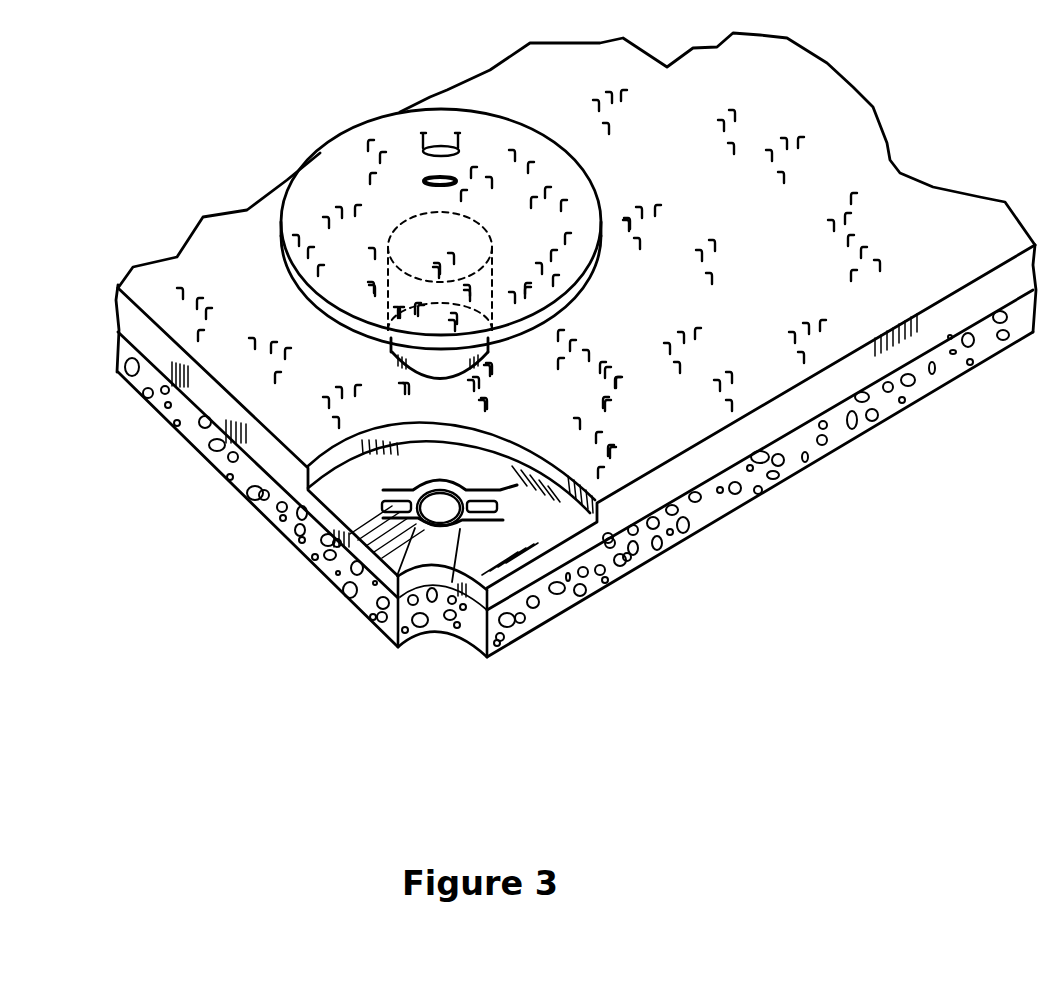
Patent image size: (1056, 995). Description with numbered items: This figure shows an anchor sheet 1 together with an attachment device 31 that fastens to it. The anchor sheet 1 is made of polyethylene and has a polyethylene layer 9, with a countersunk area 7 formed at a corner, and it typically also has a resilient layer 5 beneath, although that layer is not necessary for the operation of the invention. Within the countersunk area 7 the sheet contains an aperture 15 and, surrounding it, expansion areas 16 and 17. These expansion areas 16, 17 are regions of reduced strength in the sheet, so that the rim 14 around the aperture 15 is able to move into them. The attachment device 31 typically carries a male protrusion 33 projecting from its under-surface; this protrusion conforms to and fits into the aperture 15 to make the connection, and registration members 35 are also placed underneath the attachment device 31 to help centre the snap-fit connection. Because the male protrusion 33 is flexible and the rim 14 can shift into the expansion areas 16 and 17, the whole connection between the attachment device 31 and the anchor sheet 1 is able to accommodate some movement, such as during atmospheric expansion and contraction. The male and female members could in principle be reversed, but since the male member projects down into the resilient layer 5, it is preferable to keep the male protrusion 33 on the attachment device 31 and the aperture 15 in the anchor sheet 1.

The anchor sheet 1 is at (948, 318).
The resilient layer 5 is at (623, 560).
The countersunk area 7 is at (362, 500).
The polyethylene layer 9 is at (707, 467).
The rim 14 is at (452, 635).
The aperture 15 is at (436, 504).
The expansion area 16 is at (512, 485).
The expansion area 17 is at (503, 518).
The attachment device 31 is at (338, 183).
The male protrusion 33 is at (440, 143).
The registration member 35 is at (427, 627).